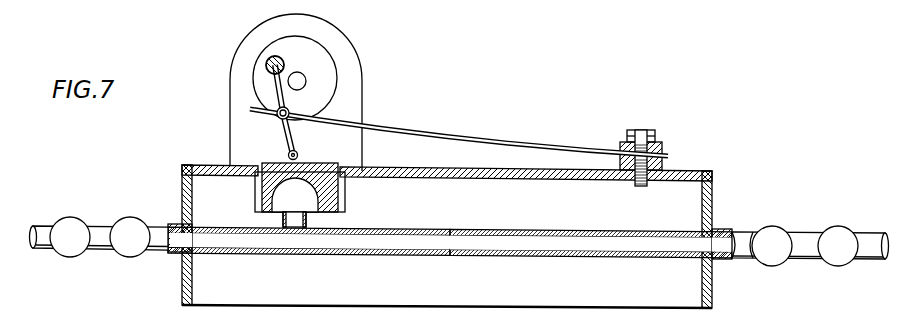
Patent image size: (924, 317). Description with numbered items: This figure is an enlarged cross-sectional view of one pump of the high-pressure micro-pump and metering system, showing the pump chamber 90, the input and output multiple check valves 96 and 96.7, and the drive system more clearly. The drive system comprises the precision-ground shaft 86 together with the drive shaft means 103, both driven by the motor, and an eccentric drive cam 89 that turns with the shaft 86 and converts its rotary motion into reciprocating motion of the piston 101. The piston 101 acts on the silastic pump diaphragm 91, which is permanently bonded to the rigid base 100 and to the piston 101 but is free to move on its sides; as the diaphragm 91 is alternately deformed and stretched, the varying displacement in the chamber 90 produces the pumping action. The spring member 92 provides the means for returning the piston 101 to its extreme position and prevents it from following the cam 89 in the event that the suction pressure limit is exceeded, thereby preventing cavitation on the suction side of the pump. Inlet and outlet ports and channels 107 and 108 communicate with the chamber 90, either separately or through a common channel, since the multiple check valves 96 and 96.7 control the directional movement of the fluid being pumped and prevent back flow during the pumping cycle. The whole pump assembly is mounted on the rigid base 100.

The precision-ground shaft 86 is at (308, 80).
The eccentric drive cam 89 is at (264, 63).
The pump chamber 90 is at (286, 195).
The silastic pump diaphragm 91 is at (338, 193).
The spring member 92 is at (512, 145).
The input multiple check valve 96 is at (99, 250).
The output multiple check valve 96.7 is at (805, 259).
The rigid base 100 is at (183, 292).
The piston 101 is at (323, 158).
The drive shaft means 103 is at (272, 92).
The inlet port and channel 107 is at (228, 243).
The outlet port and channel 108 is at (325, 243).